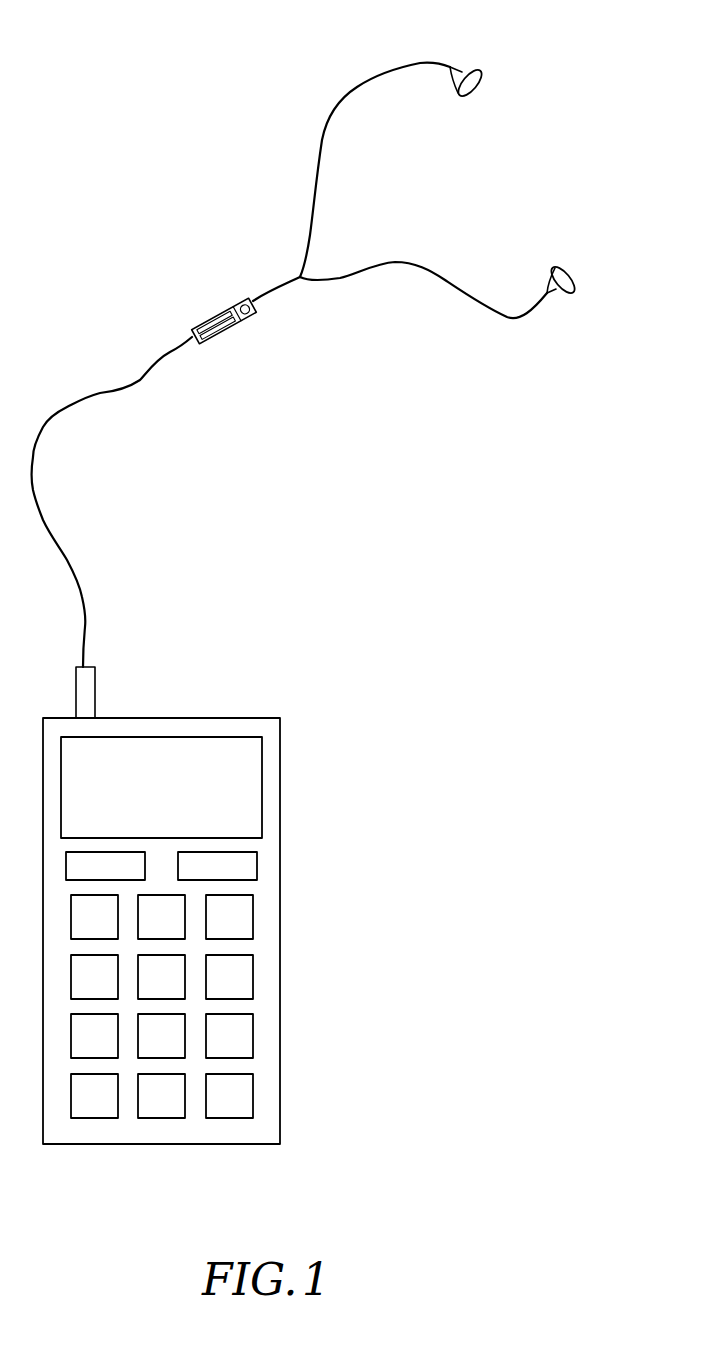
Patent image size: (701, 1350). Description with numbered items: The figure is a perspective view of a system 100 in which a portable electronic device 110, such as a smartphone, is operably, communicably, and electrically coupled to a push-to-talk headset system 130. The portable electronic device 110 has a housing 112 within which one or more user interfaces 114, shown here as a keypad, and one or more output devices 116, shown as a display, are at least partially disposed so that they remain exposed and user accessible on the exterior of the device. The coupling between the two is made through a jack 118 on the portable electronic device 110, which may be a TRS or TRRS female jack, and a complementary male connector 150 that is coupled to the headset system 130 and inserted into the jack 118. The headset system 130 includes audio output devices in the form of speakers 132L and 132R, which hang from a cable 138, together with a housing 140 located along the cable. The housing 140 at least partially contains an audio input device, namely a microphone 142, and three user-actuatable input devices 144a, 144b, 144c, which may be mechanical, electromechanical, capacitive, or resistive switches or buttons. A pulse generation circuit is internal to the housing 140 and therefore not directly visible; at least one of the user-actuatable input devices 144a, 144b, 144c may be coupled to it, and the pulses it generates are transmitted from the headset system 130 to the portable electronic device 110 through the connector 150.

The communication system 100 is at (163, 63).
The portable electronic device 110 is at (322, 923).
The housing 112 is at (281, 810).
The user interfaces 114 is at (252, 1037).
The output devices 116 is at (262, 763).
The jack 118 is at (75, 716).
The push-to-talk headset system 130 is at (197, 220).
The speaker 132L is at (478, 95).
The speaker 132R is at (570, 271).
The cable 138 is at (447, 286).
The housing 140 is at (205, 293).
The microphone 142 is at (245, 309).
The user-actuatable input device 144a is at (232, 310).
The user-actuatable input device 144b is at (214, 322).
The user-actuatable input device 144c is at (217, 328).
The connector 150 is at (97, 677).